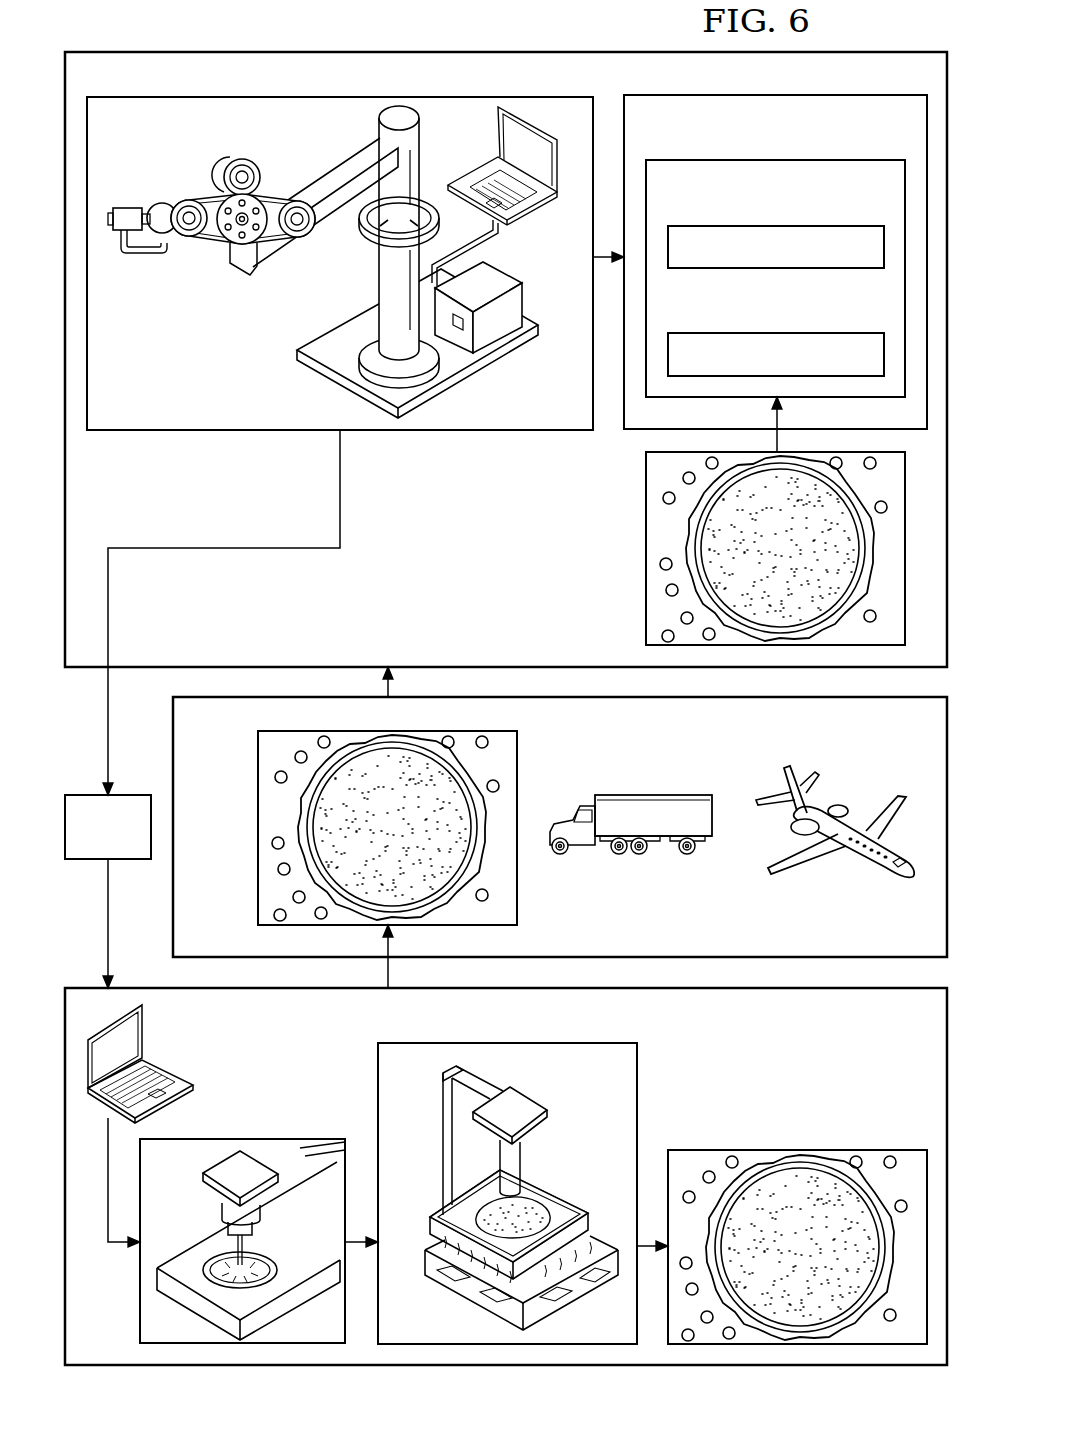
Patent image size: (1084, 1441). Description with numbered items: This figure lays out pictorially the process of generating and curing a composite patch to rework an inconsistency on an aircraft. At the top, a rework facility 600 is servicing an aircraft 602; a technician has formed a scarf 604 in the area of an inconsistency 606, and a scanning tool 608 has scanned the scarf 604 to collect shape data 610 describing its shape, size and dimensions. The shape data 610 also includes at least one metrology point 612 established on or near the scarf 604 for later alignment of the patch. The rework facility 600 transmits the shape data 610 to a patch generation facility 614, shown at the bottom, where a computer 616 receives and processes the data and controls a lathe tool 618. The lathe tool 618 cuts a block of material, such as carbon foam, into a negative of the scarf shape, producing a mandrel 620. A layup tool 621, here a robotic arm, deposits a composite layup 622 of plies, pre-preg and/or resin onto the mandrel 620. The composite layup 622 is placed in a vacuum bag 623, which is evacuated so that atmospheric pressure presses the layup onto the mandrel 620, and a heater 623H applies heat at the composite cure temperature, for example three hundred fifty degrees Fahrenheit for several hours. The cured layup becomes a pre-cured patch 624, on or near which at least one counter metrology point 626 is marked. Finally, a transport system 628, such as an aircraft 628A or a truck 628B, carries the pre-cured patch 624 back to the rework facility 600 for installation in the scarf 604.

The rework facility 600 is at (286, 47).
The aircraft 602 is at (882, 142).
The scarf 604 is at (882, 206).
The inconsistency 606 is at (757, 269).
The scanning tool 608 is at (183, 197).
The shape data 610 is at (86, 795).
The metrology point 612 is at (797, 331).
The patch generation facility 614 is at (817, 1030).
The computer 616 is at (148, 1040).
The lathe tool 618 is at (215, 1210).
The mandrel 620 is at (268, 1258).
The layup tool 621 is at (525, 1104).
The composite layup 622 is at (549, 1212).
The vacuum bag 623 is at (421, 1222).
The heater 623H is at (470, 1294).
The pre-cured patch 624 is at (712, 538).
The counter metrology point 626 is at (666, 589).
The transport system 628 is at (912, 738).
The aircraft 628A is at (640, 858).
The truck 628B is at (818, 867).